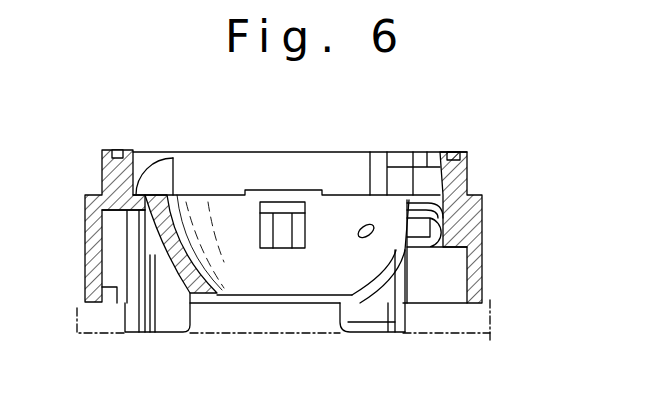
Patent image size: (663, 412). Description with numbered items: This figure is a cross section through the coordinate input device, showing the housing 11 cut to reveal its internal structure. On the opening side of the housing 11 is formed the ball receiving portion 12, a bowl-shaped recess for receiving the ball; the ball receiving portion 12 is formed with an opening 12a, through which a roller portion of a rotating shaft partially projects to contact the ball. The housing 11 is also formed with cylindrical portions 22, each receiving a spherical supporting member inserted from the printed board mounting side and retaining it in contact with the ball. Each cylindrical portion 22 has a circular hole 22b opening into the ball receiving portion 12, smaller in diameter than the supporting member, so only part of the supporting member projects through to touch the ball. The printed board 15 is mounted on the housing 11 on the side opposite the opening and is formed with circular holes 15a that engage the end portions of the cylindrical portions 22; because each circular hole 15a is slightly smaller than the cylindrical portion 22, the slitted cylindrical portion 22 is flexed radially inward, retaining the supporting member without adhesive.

The housing 11 is at (479, 164).
The ball receiving portion 12 is at (208, 207).
The opening 12a is at (298, 220).
The circular hole 22b is at (373, 222).
The cylindrical portion 22 is at (178, 307).
The circular hole 15a is at (127, 336).
The printed board 15 is at (473, 338).